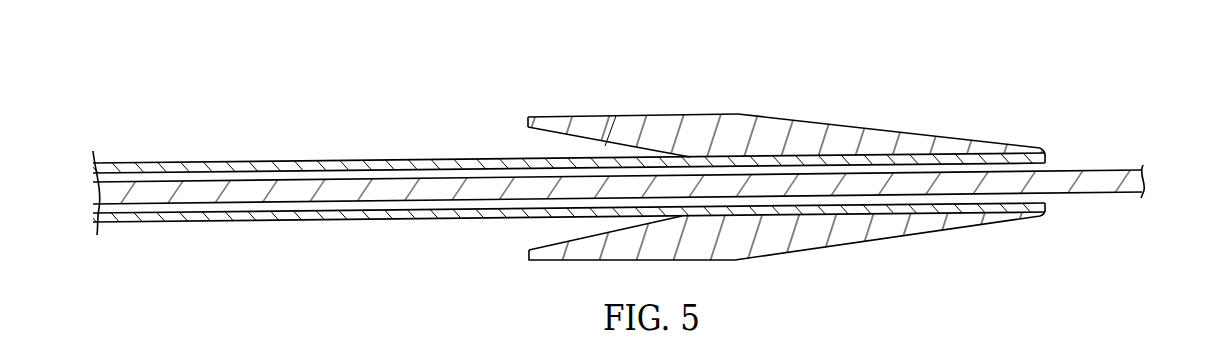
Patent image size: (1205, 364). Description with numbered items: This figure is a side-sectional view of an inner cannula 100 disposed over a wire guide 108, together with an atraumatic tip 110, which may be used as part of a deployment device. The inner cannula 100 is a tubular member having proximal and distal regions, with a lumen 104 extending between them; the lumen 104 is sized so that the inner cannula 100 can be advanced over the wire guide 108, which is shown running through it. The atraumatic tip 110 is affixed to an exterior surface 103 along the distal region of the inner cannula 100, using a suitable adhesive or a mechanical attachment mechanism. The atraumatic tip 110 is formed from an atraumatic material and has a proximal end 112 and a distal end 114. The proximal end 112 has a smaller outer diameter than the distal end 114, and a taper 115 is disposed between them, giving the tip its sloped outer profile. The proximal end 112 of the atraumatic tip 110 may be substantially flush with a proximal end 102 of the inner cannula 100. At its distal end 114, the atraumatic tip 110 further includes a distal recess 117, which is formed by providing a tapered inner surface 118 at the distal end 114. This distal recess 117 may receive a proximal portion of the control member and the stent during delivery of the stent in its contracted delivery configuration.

The inner cannula 100 is at (239, 152).
The proximal end 102 is at (1043, 217).
The exterior surface 103 is at (395, 162).
The lumen 104 is at (332, 175).
The wire guide 108 is at (1107, 188).
The atraumatic tip 110 is at (765, 92).
The proximal end 112 is at (1043, 145).
The distal end 114 is at (532, 112).
The taper 115 is at (860, 127).
The distal recess 117 is at (560, 147).
The tapered inner surface 118 is at (603, 140).